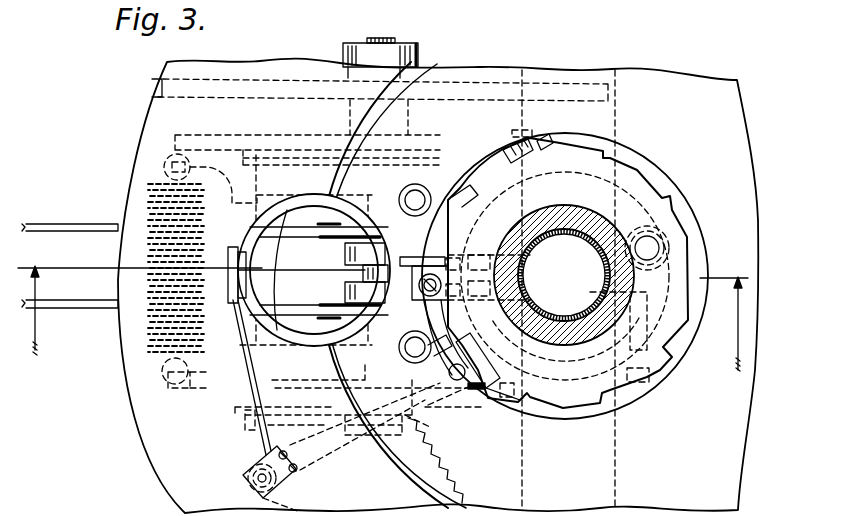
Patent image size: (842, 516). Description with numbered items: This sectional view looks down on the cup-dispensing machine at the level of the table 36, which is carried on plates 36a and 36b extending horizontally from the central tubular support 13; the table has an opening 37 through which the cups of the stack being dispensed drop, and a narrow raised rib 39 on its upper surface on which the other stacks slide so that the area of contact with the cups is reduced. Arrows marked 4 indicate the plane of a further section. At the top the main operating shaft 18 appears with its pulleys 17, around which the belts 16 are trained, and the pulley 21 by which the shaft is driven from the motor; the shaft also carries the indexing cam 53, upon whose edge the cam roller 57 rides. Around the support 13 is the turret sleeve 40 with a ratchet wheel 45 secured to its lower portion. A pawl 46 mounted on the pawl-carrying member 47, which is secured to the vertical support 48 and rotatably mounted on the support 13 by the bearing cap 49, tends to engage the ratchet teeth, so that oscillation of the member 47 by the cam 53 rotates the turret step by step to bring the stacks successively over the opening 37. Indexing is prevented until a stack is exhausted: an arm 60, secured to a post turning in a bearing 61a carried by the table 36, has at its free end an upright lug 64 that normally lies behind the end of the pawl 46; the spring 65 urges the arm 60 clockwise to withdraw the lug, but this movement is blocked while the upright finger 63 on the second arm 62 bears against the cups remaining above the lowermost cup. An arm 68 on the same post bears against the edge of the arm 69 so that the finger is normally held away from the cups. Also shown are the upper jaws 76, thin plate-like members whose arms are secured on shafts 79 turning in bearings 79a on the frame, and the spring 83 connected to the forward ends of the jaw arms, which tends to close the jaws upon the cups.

The section line 4- 4 is at (383, 318).
The second tubular support 13 is at (595, 253).
The belt 16 is at (62, 303).
The pulley 17 is at (335, 245).
The shaft 18 is at (366, 39).
The pulley 21 is at (155, 82).
The table 36 is at (148, 128).
The plate 36a is at (600, 455).
The plate 36b is at (630, 120).
The opening 37 is at (297, 197).
The rib 39 is at (425, 490).
The sleeve member 40 is at (600, 220).
The ratchet wheel 45 is at (640, 172).
The pawl 46 is at (421, 319).
The pawl-carrying member 47 is at (650, 205).
The vertical support 48 is at (670, 248).
The bearing cap 49 is at (670, 380).
The indexing cam 53 is at (215, 138).
The cam roller 57 is at (540, 138).
The arm 60 is at (362, 448).
The bearing 61a is at (292, 478).
The second arm 62 is at (246, 385).
The upright finger 63 is at (233, 252).
The upright lug 64 is at (489, 366).
The spring 65 is at (452, 482).
The arm 68 is at (255, 458).
The second arm 69 is at (300, 465).
The upper jaws 76 is at (277, 330).
The shaft 79 is at (453, 198).
The bearing 79a is at (422, 208).
The spring 83 is at (146, 330).